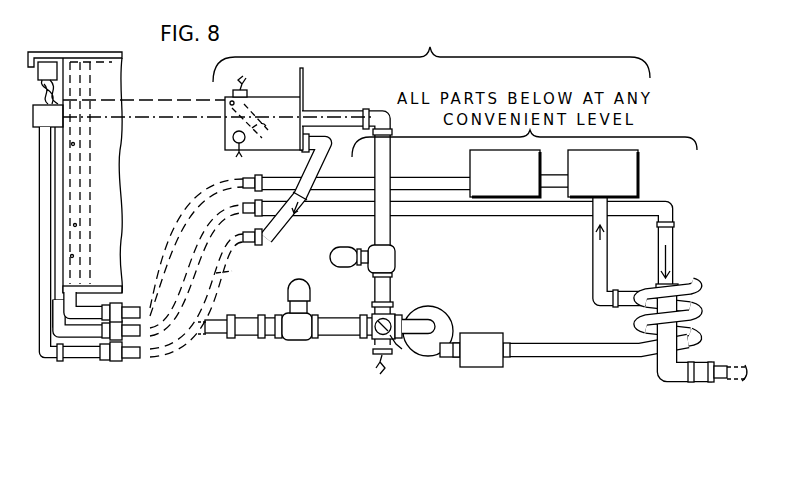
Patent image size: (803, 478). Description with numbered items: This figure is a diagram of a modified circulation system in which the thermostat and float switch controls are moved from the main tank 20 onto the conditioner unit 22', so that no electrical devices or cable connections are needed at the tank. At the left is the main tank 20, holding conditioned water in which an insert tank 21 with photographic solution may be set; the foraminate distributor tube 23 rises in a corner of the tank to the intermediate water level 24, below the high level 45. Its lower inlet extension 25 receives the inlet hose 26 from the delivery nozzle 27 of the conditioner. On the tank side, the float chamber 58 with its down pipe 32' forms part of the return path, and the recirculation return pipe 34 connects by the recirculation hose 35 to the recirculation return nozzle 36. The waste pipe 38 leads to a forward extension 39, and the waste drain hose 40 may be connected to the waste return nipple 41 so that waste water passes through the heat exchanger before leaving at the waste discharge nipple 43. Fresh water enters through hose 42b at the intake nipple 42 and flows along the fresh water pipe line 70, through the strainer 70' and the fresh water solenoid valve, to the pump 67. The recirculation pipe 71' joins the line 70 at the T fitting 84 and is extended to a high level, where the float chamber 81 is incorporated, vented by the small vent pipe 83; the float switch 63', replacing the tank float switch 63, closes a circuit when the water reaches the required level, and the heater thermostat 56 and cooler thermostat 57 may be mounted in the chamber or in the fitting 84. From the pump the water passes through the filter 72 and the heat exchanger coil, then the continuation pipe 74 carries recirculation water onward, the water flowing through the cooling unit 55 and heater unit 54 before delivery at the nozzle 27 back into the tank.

The main tank 20 is at (92, 52).
The insert tank 21 is at (125, 168).
The conditioner unit 22' is at (431, 55).
The foraminate distributor tube 23 is at (93, 222).
The intermediate water level 24 is at (170, 124).
The forward inlet extension 25 is at (93, 340).
The inlet hose 26 is at (210, 179).
The delivery nozzle 27 is at (259, 177).
The down pipe 32' is at (53, 244).
The recirculation return pipe 34 is at (117, 360).
The recirculation hose 35 is at (229, 283).
The recirculation return nozzle 36 is at (243, 246).
The waste pipe 38 is at (40, 100).
The forward extension 39 is at (97, 309).
The waste drain hose 40 is at (152, 224).
The waste return nipple 41 is at (243, 216).
The intake nipple 42 is at (217, 334).
The fresh water supply hose 42b is at (206, 337).
The waste discharge nipple 43 is at (719, 365).
The high water level 45 is at (148, 97).
The heater unit 54 is at (472, 151).
The cooling unit 55 is at (640, 163).
The heater thermostat 56 is at (233, 141).
The cooler thermostat 57 is at (389, 360).
The float chamber 58 is at (42, 118).
The float switch 63 is at (258, 81).
The float switch 63' is at (213, 123).
The water pump 67 is at (450, 326).
The fresh water pipe line 70 is at (342, 315).
The strainer 70' is at (269, 309).
The recirculation pipe 71' is at (364, 227).
The filter 72 is at (479, 333).
The continuation pipe 74 is at (357, 214).
The float chamber 81 is at (302, 99).
The vent pipe 83 is at (304, 80).
The T fitting 84 is at (392, 302).